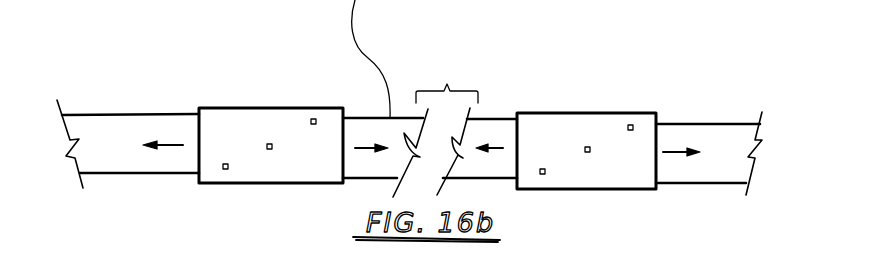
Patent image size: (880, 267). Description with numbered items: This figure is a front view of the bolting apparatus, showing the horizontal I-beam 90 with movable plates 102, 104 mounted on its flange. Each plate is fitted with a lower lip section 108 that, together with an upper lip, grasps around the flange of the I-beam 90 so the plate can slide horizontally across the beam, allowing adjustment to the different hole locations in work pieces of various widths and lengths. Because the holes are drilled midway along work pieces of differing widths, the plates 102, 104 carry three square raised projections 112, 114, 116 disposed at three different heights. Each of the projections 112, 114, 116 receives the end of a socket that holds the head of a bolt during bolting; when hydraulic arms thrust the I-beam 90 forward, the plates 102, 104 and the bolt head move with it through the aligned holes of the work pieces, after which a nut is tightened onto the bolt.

The horizontal I-beam 90 is at (697, 123).
The movable plate 102 is at (222, 108).
The movable plate 104 is at (551, 113).
The lower lip section 108 is at (643, 1).
The square raised projection 112 is at (313, 119).
The square raised projection 114 is at (271, 144).
The square raised projection 116 is at (226, 169).